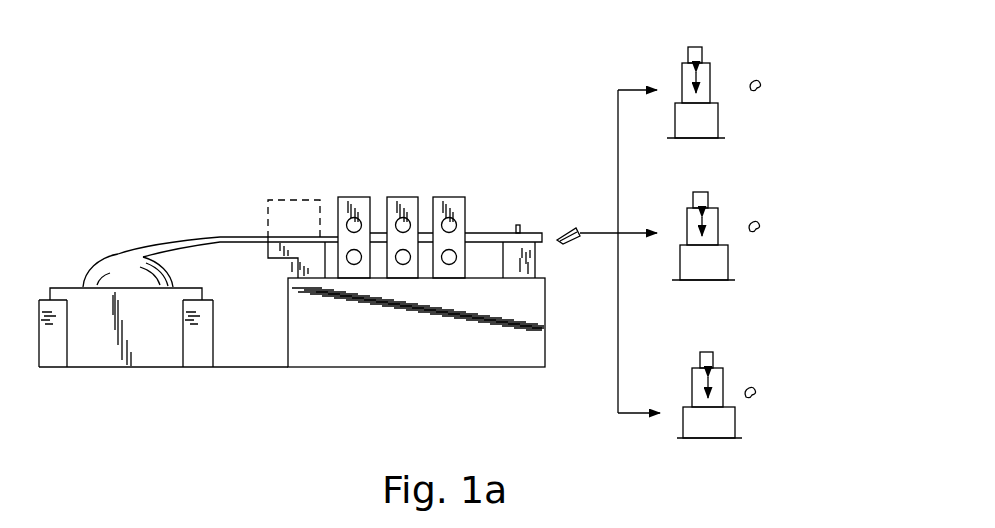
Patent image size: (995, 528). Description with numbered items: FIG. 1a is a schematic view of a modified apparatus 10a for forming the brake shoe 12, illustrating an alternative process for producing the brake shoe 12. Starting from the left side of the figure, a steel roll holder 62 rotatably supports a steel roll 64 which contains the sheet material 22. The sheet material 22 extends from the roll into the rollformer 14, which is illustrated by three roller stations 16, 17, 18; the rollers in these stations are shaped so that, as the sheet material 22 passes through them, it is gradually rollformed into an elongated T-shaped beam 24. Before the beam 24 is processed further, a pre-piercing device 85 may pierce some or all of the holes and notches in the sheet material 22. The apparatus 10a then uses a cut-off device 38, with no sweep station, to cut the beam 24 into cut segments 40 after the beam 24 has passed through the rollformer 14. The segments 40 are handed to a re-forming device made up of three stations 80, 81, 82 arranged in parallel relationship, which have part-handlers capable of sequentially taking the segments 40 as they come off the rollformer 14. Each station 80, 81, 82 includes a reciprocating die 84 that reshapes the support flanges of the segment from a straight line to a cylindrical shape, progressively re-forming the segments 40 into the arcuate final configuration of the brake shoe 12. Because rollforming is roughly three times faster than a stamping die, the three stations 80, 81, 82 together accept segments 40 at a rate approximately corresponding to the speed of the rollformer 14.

The modified apparatus 10a is at (416, 97).
The brake shoe 12 is at (768, 86).
The rollformer 14 is at (356, 124).
The first roller station 16 is at (357, 195).
The second roller station 17 is at (402, 195).
The third roller station 18 is at (450, 197).
The sheet material 22 is at (213, 238).
The T-shaped beam 24 is at (493, 233).
The cut-off device 38 is at (537, 255).
The cut segment 40 is at (565, 228).
The steel roll holder 62 is at (98, 357).
The steel roll 64 is at (118, 267).
The first re-forming station 80 is at (745, 110).
The second re-forming station 81 is at (735, 215).
The third re-forming station 82 is at (750, 373).
The reciprocating die 84 is at (712, 78).
The pre-piercing device 85 is at (293, 200).